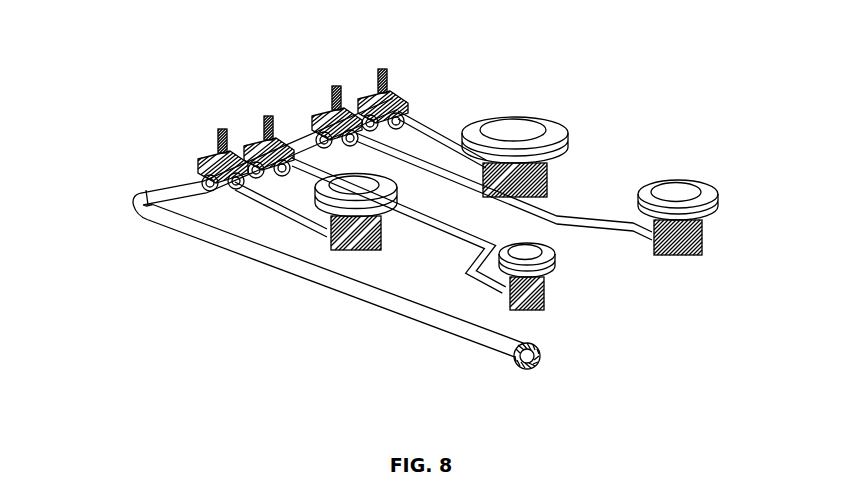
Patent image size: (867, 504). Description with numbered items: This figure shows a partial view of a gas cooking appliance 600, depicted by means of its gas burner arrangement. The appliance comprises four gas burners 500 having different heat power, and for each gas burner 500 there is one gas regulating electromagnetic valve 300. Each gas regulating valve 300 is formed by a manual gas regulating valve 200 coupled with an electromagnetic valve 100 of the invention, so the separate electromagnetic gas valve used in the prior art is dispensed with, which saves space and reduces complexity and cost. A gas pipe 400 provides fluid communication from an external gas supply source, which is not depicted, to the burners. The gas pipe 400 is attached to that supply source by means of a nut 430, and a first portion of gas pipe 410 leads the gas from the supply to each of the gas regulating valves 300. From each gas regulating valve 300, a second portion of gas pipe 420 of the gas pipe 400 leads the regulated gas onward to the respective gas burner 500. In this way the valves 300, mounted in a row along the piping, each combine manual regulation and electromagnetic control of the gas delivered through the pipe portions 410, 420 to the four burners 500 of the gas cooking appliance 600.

The electromagnetic valve 100 is at (364, 203).
The manual gas regulating valve 200 is at (203, 172).
The gas regulating electromagnetic valve 300 is at (380, 102).
The gas pipe 400 is at (351, 234).
The first portion of gas pipe 410 is at (337, 283).
The second portion of gas pipe 420 is at (282, 212).
The nut 430 is at (541, 355).
The gas burner 500 is at (543, 130).
The gas cooking appliance 600 is at (408, 207).